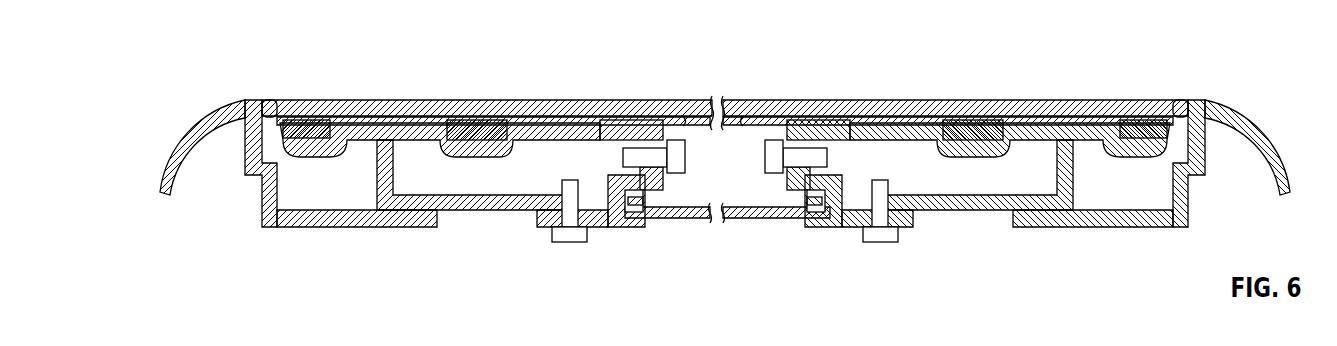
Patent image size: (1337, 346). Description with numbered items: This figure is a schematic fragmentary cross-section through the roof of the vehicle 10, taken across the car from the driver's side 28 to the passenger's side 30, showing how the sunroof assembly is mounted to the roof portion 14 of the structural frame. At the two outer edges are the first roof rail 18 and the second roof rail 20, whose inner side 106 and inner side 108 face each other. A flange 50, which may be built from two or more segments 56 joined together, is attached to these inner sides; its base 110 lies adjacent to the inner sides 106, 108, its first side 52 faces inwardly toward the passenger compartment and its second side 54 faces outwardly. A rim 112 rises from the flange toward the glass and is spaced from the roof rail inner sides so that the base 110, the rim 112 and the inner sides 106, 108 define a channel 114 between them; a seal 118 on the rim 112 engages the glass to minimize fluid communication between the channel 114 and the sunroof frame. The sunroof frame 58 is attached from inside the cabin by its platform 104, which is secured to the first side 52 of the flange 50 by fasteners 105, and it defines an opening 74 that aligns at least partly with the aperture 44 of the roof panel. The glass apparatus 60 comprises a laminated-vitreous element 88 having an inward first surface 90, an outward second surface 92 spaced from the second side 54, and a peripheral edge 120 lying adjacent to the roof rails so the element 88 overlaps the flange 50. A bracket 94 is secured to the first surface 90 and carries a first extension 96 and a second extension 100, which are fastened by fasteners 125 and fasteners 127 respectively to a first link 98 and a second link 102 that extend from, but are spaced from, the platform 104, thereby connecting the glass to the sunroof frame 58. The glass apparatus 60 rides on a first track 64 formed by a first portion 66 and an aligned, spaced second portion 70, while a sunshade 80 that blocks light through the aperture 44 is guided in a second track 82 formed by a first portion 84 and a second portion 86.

The vehicle 10 is at (1163, 217).
The roof portion 14 is at (207, 100).
The first roof rail 18 is at (210, 110).
The second roof rail 20 is at (1208, 100).
The driver's side 28 is at (245, 20).
The passenger's side 30 is at (1250, 28).
The aperture 44 is at (712, 88).
The flange 50 is at (370, 218).
The first side 52 is at (407, 227).
The second side 54 is at (410, 195).
The segments 56 is at (277, 227).
The sunroof frame 58 is at (615, 178).
The glass apparatus 60 is at (465, 110).
The first track 64 is at (770, 172).
The first portion 66 is at (577, 225).
The second portion 70 is at (840, 190).
The opening 74 is at (728, 232).
The sunshade 80 is at (668, 220).
The second track 82 is at (638, 228).
The first portion 84 is at (632, 190).
The second portion 86 is at (817, 227).
The laminated-vitreous element 88 is at (495, 120).
The first surface 90 is at (685, 100).
The second surface 92 is at (620, 100).
The bracket 94 is at (552, 130).
The first extension 96 is at (615, 107).
The first link 98 is at (655, 228).
The second extension 100 is at (835, 110).
The second link 102 is at (800, 228).
The platform 104 is at (593, 225).
The fasteners 105 is at (565, 235).
The inner side 106 is at (303, 110).
The inner side 108 is at (1165, 110).
The base 110 is at (323, 208).
The rim 112 is at (382, 173).
The channel 114 is at (350, 165).
The seal 118 is at (415, 140).
The peripheral edge 120 is at (277, 100).
The fasteners 125 is at (683, 138).
The fasteners 127 is at (777, 123).